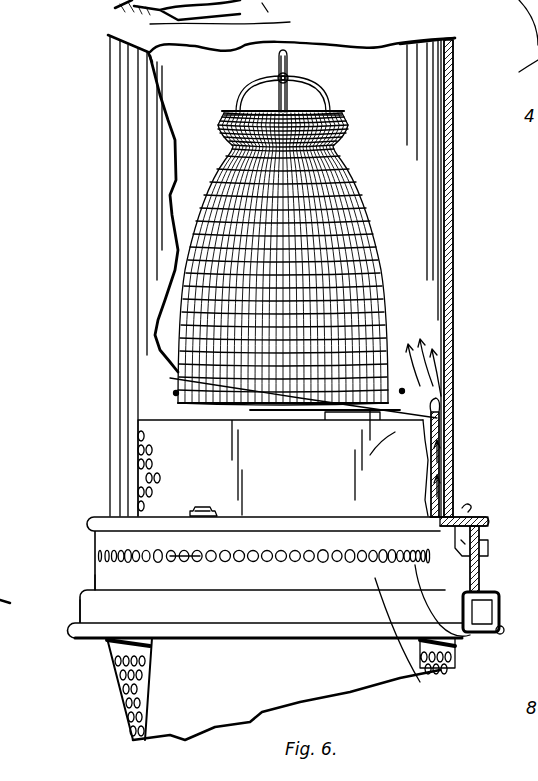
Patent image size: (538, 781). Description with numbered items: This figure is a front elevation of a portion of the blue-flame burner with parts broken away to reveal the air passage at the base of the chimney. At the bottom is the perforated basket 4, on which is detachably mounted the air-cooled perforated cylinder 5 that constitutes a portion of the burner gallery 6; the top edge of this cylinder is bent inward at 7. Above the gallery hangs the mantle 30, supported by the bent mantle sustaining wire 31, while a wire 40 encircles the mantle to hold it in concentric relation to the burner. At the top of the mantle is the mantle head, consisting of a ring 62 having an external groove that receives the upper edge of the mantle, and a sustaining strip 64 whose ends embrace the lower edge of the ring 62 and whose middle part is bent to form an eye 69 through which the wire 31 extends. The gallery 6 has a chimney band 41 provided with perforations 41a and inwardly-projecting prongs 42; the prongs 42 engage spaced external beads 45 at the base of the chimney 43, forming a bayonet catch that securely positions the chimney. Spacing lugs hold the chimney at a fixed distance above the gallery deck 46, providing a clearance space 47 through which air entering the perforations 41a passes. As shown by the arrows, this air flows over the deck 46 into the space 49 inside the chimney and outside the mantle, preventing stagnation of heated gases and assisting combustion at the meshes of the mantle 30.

The mantle 30 is at (363, 202).
The mantle sustaining wire 31 is at (289, 56).
The eye 69 is at (291, 78).
The sustaining strip 64 is at (320, 100).
The ring 62 is at (336, 113).
The chimney 43 is at (456, 220).
The space 49 is at (420, 335).
The wire 40 is at (175, 393).
The air-cooled perforated cylinder 5 is at (139, 432).
The inwardly-projecting prongs 42 is at (470, 506).
The inwardly bent top edge 7 is at (455, 404).
The external beads 45 is at (490, 522).
The gallery deck 46 is at (490, 543).
The perforations 41a is at (470, 557).
The chimney band 41 is at (479, 574).
The clearance space 47 is at (462, 636).
The burner gallery 6 is at (92, 594).
The perforated basket 4 is at (126, 668).